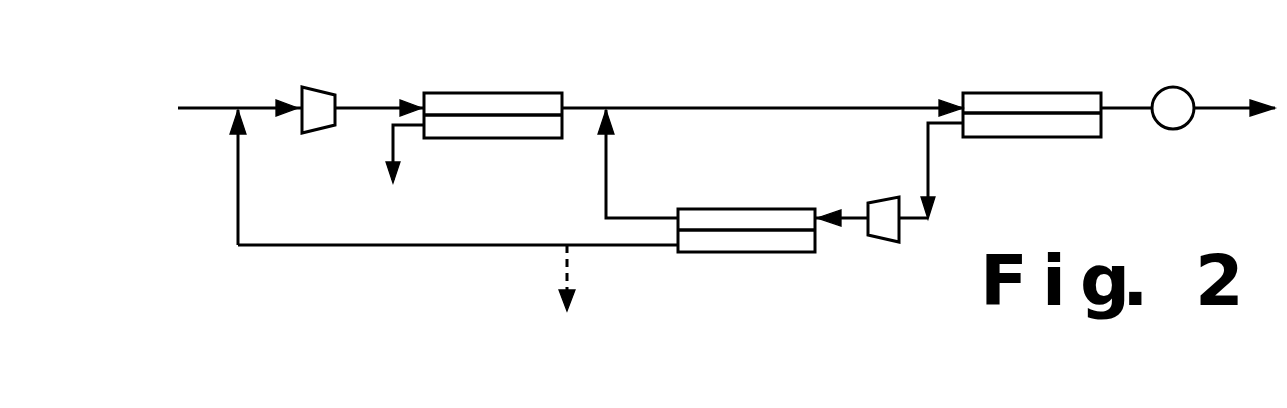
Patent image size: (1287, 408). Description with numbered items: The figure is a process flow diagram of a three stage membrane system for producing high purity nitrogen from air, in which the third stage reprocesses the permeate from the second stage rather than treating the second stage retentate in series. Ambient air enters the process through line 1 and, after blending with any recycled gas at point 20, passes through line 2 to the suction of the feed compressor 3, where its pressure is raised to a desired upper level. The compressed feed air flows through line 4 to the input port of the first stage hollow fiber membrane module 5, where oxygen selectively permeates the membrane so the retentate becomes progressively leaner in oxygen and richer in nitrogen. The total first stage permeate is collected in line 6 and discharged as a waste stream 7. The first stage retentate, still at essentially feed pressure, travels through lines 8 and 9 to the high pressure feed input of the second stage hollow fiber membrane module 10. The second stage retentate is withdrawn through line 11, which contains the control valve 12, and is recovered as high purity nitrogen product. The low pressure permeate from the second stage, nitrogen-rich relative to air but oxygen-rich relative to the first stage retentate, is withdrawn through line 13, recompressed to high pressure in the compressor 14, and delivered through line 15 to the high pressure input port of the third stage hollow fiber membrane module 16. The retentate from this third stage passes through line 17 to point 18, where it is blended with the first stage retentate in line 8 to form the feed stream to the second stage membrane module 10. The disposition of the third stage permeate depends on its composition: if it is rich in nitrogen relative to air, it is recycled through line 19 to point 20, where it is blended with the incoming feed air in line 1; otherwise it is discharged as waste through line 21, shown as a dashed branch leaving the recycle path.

The line 1 is at (228, 107).
The line 2 is at (258, 107).
The feed compressor 3 is at (313, 88).
The line 4 is at (360, 105).
The first stage hollow fiber membrane module 5 is at (485, 93).
The line 6 is at (393, 140).
The waste stream 7 is at (397, 188).
The line 8 is at (580, 105).
The line 9 is at (735, 105).
The second stage hollow fiber membrane module 10 is at (1040, 93).
The line 11 is at (1138, 110).
The control valve 12 is at (1173, 129).
The line 13 is at (930, 158).
The compressor 14 is at (880, 242).
The line 15 is at (852, 217).
The third stage hollow fiber membrane module 16 is at (765, 209).
The line 17 is at (606, 172).
The point 18 is at (606, 107).
The line 19 is at (355, 248).
The point 20 is at (232, 112).
The line 21 is at (572, 265).